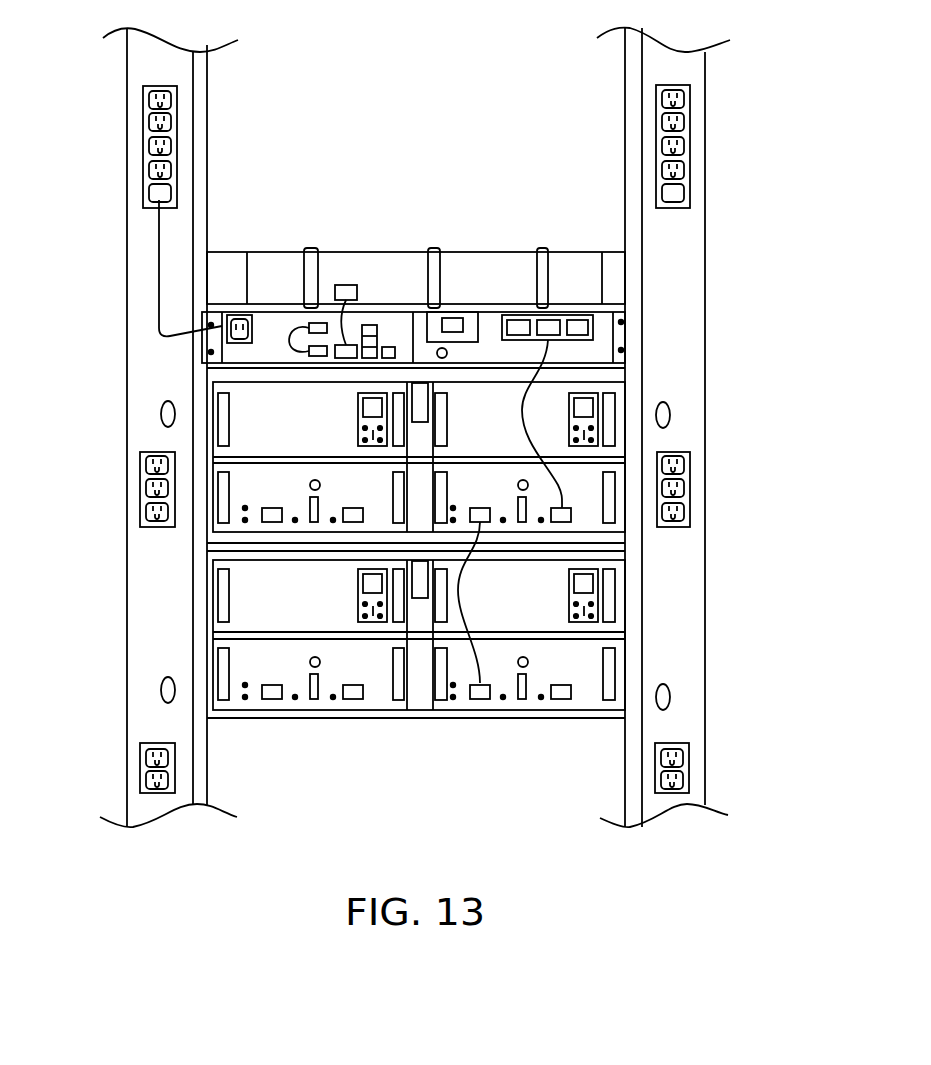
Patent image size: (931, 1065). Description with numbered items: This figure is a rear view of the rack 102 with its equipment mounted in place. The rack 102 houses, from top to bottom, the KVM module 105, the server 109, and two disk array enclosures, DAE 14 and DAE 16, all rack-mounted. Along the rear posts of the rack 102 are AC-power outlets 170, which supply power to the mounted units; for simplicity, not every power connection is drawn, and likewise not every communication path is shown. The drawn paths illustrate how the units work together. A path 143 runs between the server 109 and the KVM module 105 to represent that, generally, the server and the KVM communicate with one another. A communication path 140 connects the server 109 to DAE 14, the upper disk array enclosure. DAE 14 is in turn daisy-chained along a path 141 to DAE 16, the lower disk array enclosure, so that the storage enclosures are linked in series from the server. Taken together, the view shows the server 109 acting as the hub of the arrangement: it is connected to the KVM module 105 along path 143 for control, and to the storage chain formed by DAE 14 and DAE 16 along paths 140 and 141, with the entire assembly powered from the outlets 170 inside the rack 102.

The rack 102 is at (127, 262).
The AC-power outlets 170 is at (142, 139).
The KVM module 105 is at (625, 278).
The server 109 is at (625, 340).
The disk array enclosure (DAE) 14 is at (627, 440).
The disk array enclosure (DAE) 16 is at (627, 642).
The communication path 140 is at (520, 422).
The path 141 is at (462, 600).
The path 143 is at (346, 352).